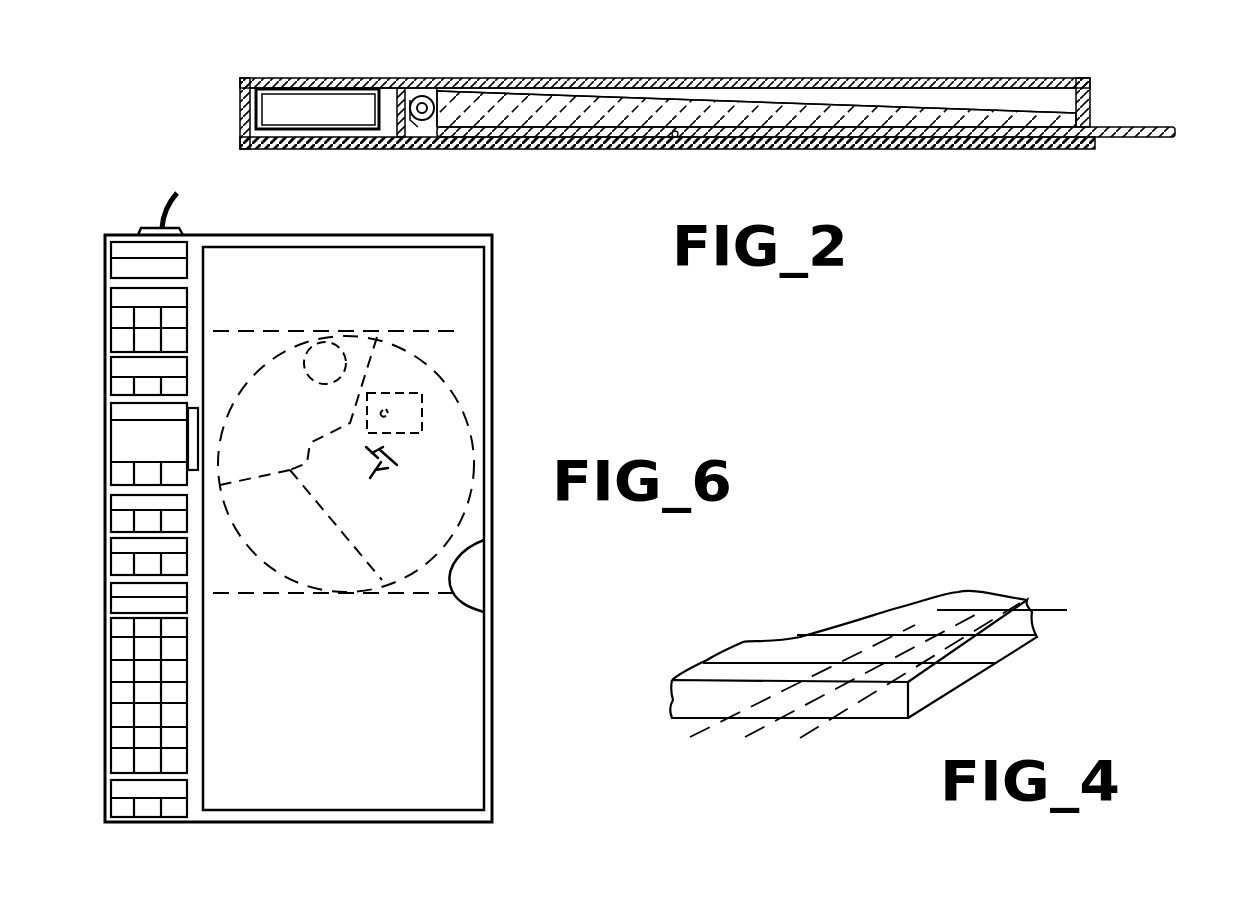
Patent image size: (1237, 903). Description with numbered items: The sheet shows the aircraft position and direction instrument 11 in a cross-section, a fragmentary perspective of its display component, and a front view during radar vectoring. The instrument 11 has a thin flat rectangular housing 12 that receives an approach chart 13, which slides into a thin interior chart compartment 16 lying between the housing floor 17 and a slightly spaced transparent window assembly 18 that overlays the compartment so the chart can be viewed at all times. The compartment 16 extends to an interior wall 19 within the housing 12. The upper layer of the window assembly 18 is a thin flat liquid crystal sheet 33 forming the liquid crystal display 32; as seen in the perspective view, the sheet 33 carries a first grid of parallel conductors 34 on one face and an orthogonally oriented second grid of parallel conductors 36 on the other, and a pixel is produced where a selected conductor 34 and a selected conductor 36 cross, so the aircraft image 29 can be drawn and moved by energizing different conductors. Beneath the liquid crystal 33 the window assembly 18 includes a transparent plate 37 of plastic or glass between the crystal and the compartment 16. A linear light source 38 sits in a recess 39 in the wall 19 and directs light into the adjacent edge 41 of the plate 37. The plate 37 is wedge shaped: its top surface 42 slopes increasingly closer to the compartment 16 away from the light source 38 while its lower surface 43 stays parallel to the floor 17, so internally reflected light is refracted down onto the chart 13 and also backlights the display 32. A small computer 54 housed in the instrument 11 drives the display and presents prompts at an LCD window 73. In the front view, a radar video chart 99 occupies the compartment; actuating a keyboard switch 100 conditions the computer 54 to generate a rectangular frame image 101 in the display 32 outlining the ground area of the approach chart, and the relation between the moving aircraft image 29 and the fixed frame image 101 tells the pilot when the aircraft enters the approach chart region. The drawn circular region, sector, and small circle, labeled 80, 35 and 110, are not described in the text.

In FIG. 2, the aircraft position and direction instrument 11 is at (1031, 160).
In FIG. 6, the aircraft position and direction instrument 11 is at (500, 653).
In FIG. 2, the housing 12 is at (318, 149).
In FIG. 2, the approach chart 13 is at (1127, 126).
In FIG. 2, the chart compartment 16 is at (676, 138).
In FIG. 2, the housing floor 17 is at (923, 149).
In FIG. 2, the transparent window assembly 18 is at (520, 77).
In FIG. 2, the interior wall 19 is at (463, 148).
In FIG. 6, the aircraft image 29 is at (383, 480).
In FIG. 2, the liquid crystal display 32 is at (921, 77).
In FIG. 6, the liquid crystal display 32 is at (452, 335).
In FIG. 4, the liquid crystal display 32 is at (924, 584).
In FIG. 2, the liquid crystal sheet 33 is at (635, 84).
In FIG. 4, the liquid crystal sheet 33 is at (857, 627).
In FIG. 4, the first grid of parallel conductors 34 is at (1053, 610).
In FIG. 6, the menu sector 35 is at (301, 458).
In FIG. 4, the second grid of parallel conductors 36 is at (813, 728).
In FIG. 2, the transparent plate 37 is at (802, 101).
In FIG. 2, the linear light source 38 is at (422, 96).
In FIG. 2, the recess 39 is at (423, 121).
In FIG. 2, the edge of transparent plate 41 is at (430, 93).
In FIG. 2, the top surface of plate 42 is at (980, 112).
In FIG. 2, the lower surface of plate 43 is at (610, 138).
In FIG. 2, the computer 54 is at (276, 107).
In FIG. 6, the LCD window 73 is at (124, 265).
In FIG. 6, the circular menu region 80 is at (346, 464).
In FIG. 6, the radar video chart 99 is at (468, 574).
In FIG. 6, the keyboard switch 100 is at (409, 479).
In FIG. 6, the frame image 101 is at (424, 412).
In FIG. 6, the circular icon 110 is at (325, 363).